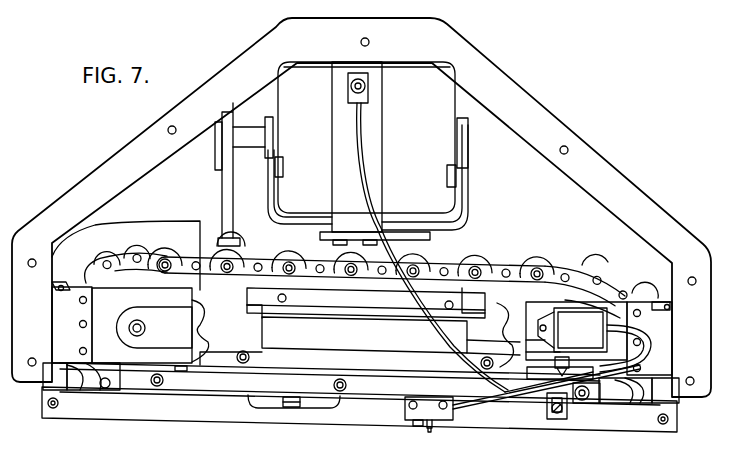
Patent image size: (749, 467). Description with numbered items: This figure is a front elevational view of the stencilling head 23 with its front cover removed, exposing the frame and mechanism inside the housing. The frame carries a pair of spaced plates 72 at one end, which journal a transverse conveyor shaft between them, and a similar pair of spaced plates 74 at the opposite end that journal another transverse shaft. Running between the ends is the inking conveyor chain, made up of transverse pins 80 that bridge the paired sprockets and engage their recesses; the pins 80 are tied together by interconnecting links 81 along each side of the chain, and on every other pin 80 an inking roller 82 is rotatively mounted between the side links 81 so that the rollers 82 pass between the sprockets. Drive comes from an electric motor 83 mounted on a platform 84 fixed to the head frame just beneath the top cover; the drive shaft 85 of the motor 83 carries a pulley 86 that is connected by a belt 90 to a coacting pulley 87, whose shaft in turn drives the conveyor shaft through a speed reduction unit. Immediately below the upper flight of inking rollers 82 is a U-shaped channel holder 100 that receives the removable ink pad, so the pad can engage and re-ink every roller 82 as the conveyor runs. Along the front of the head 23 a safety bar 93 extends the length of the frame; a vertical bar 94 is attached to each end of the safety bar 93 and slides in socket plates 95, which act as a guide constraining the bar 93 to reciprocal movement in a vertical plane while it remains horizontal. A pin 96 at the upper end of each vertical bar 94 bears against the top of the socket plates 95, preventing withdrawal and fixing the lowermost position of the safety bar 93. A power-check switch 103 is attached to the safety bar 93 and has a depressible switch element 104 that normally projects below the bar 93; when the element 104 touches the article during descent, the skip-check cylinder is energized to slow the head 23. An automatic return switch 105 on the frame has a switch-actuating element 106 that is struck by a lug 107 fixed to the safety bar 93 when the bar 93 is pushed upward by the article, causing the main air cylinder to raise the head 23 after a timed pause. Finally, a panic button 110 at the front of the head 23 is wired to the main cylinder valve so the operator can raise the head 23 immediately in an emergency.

The stencilling head 23 is at (561, 116).
The spaced plates 72 is at (108, 352).
The spaced plates 74 is at (535, 368).
The transverse pins 80 is at (501, 261).
The interconnecting links 81 is at (448, 259).
The inking roller 82 is at (597, 258).
The electric motor 83 is at (421, 110).
The platform 84 is at (397, 233).
The drive shaft 85 is at (250, 136).
The pulley 86 is at (220, 162).
The coacting pulley 87 is at (238, 237).
The belt 90 is at (228, 193).
The safety bar 93 is at (198, 410).
The vertical bar 94 is at (57, 382).
The socket plates 95 is at (57, 323).
The pin 96 is at (55, 283).
The U-shaped channel holder 100 is at (243, 311).
The power-check switch 103 is at (412, 413).
The depressible switch element 104 is at (432, 429).
The automatic return switch 105 is at (588, 337).
The switch-actuating element 106 is at (587, 398).
The lug 107 is at (570, 418).
The panic button 110 is at (353, 78).